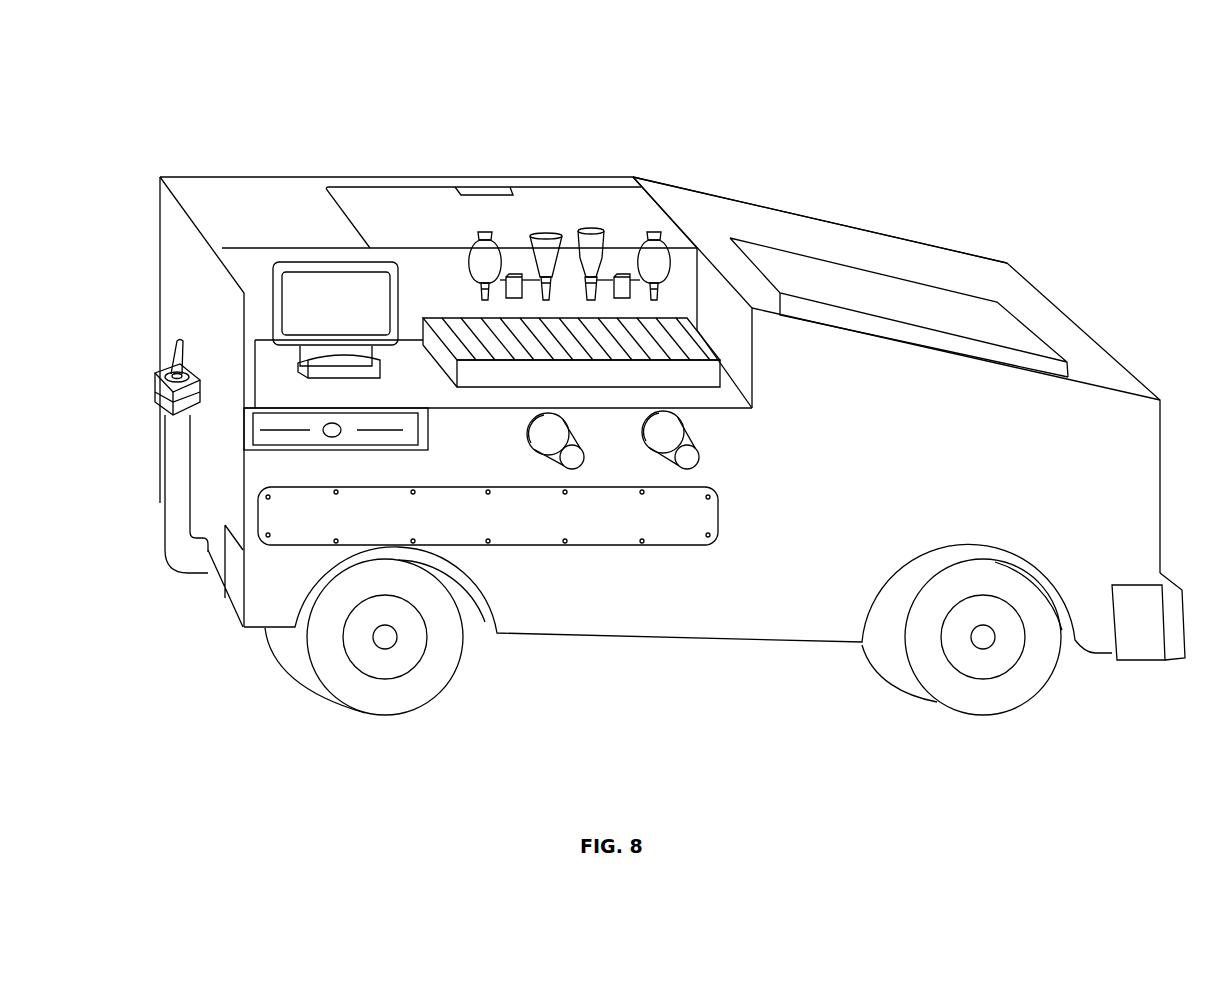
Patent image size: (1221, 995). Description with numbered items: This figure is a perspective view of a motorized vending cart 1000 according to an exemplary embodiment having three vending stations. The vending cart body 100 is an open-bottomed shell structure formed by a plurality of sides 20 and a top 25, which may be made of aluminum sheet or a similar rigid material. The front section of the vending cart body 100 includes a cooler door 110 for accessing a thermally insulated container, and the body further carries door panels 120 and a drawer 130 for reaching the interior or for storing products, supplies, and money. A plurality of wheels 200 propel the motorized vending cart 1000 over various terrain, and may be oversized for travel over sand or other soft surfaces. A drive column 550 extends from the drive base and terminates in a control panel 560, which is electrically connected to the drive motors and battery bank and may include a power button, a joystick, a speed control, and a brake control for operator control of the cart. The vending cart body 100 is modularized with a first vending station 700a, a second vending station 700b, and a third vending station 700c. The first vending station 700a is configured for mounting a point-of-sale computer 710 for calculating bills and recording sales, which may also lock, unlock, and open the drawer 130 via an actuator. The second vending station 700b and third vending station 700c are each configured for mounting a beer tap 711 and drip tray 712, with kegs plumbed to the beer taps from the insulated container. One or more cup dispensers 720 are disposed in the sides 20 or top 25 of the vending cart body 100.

The motorized vending cart 1000 is at (1112, 190).
The vending cart body 100 is at (1110, 353).
The cooler door 110 is at (840, 262).
The door panels 120 is at (363, 193).
The drawer 130 is at (242, 432).
The sides 20 is at (757, 607).
The top 25 is at (978, 265).
The wheels 200 is at (413, 708).
The drive column 550 is at (165, 528).
The control panel 560 is at (155, 372).
The first vending station 700a is at (270, 248).
The second vending station 700b is at (488, 217).
The third vending station 700c is at (595, 222).
The point-of-sale computer 710 is at (303, 262).
The beer tap 711 is at (513, 255).
The drip tray 712 is at (687, 333).
The cup dispensers 720 is at (660, 458).